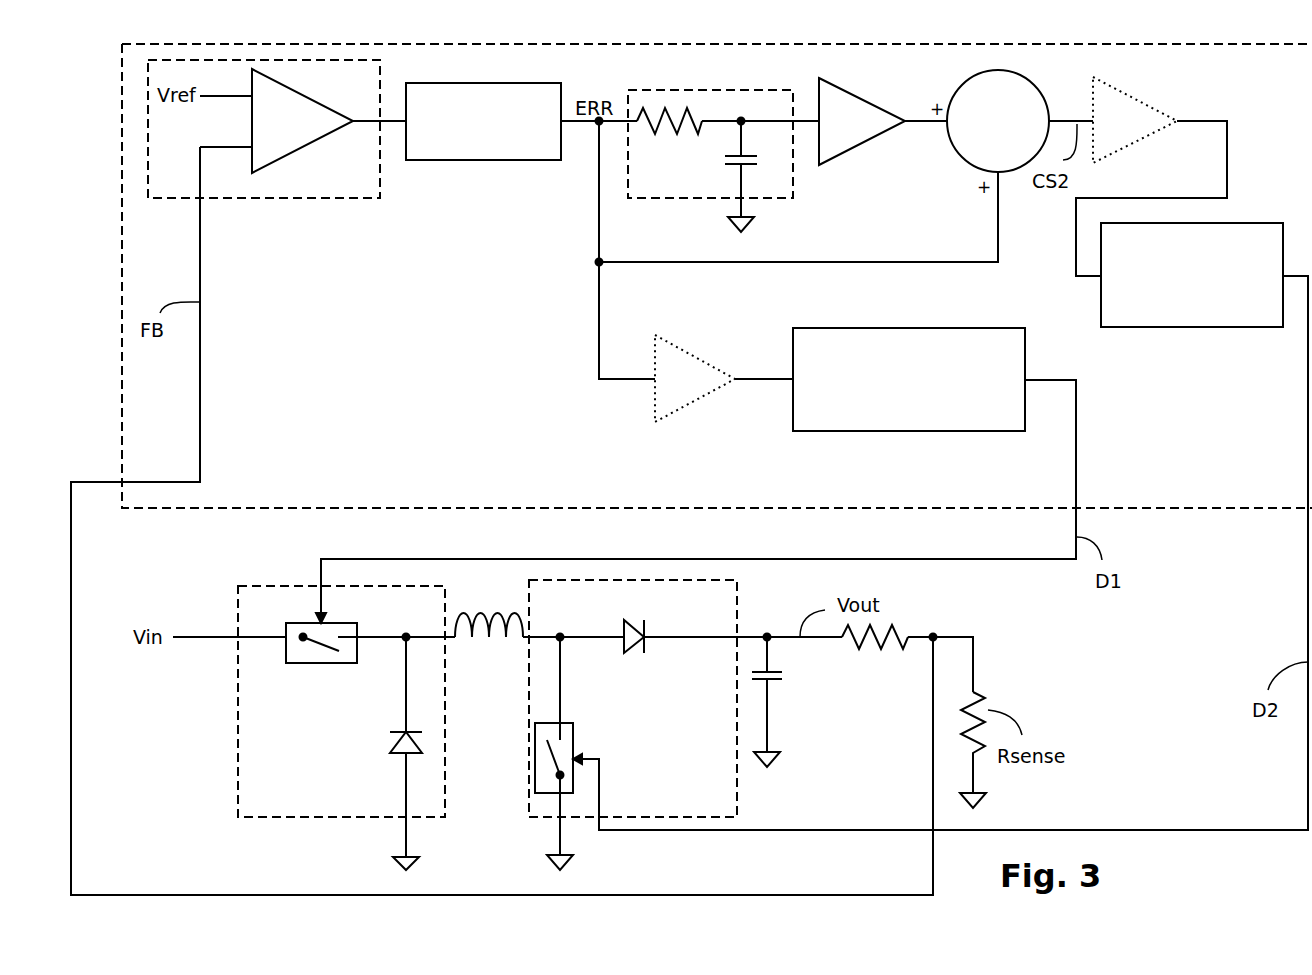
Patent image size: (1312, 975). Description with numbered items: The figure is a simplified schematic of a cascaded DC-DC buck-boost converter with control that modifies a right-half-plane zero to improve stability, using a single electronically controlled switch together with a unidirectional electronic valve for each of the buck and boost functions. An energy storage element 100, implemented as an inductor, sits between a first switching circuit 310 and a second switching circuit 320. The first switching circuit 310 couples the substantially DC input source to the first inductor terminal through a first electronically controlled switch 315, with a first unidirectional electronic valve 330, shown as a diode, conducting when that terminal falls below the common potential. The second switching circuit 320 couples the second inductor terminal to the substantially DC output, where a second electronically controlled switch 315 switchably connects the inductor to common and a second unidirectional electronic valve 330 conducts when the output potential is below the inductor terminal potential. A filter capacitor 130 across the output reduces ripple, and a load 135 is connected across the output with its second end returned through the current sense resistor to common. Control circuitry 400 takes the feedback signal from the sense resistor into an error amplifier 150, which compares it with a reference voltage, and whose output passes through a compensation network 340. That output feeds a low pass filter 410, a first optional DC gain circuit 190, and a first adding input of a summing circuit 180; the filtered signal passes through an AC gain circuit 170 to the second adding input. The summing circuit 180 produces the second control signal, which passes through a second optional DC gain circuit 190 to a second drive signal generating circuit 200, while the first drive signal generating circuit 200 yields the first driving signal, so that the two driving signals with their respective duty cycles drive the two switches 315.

The energy storage element 100 is at (497, 627).
The filter capacitor 130 is at (785, 678).
The load 135 is at (870, 655).
The error amplifier 150 is at (328, 198).
The AC gain circuit 170 is at (838, 85).
The summing circuit 180 is at (953, 146).
The optional DC gain circuit 190 is at (1133, 95).
The drive signal generating circuit 200 is at (1192, 327).
The first switching circuit 310 is at (238, 777).
The electronically controlled switch 315 is at (315, 663).
The second switching circuit 320 is at (529, 805).
The unidirectional electronic valve 330 is at (389, 740).
The compensation network 340 is at (508, 160).
The control circuitry 400 is at (932, 508).
The low pass filter 410 is at (793, 178).